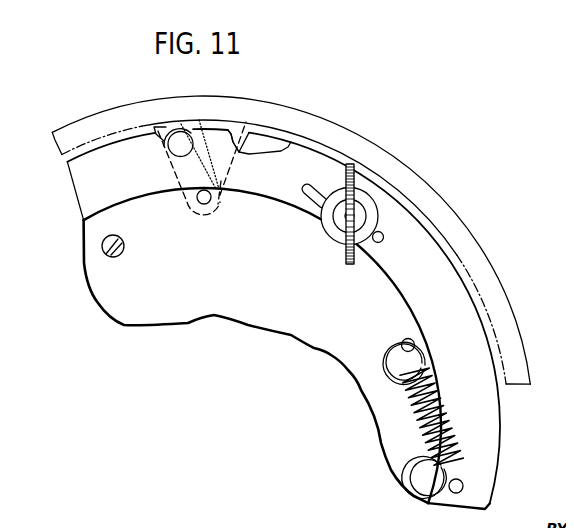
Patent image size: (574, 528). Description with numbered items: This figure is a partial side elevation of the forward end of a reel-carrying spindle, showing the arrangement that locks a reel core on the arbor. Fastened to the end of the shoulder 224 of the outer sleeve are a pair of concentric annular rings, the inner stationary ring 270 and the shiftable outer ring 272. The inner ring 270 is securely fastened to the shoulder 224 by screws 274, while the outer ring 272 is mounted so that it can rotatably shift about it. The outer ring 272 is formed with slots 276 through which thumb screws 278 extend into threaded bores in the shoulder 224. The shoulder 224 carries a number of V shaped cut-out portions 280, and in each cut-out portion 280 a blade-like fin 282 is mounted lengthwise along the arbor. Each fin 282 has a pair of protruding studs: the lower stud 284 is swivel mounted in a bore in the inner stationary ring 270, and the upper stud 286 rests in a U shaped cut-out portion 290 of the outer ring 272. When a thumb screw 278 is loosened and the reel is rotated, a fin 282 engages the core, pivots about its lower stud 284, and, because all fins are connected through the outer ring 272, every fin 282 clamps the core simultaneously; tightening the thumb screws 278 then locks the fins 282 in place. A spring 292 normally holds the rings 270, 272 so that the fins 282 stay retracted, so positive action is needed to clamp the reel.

The shoulder 224 is at (265, 147).
The inner stationary ring 270 is at (268, 313).
The outer ring 272 is at (488, 432).
The screws 274 is at (102, 247).
The slots 276 is at (382, 239).
The thumb screws 278 is at (350, 193).
The V shaped cut-out portions 280 is at (517, 362).
The blade-like fin 282 is at (238, 131).
The lower stud 284 is at (200, 203).
The upper stud 286 is at (167, 142).
The U shaped cut-out portion 290 is at (171, 128).
The spring 292 is at (410, 423).